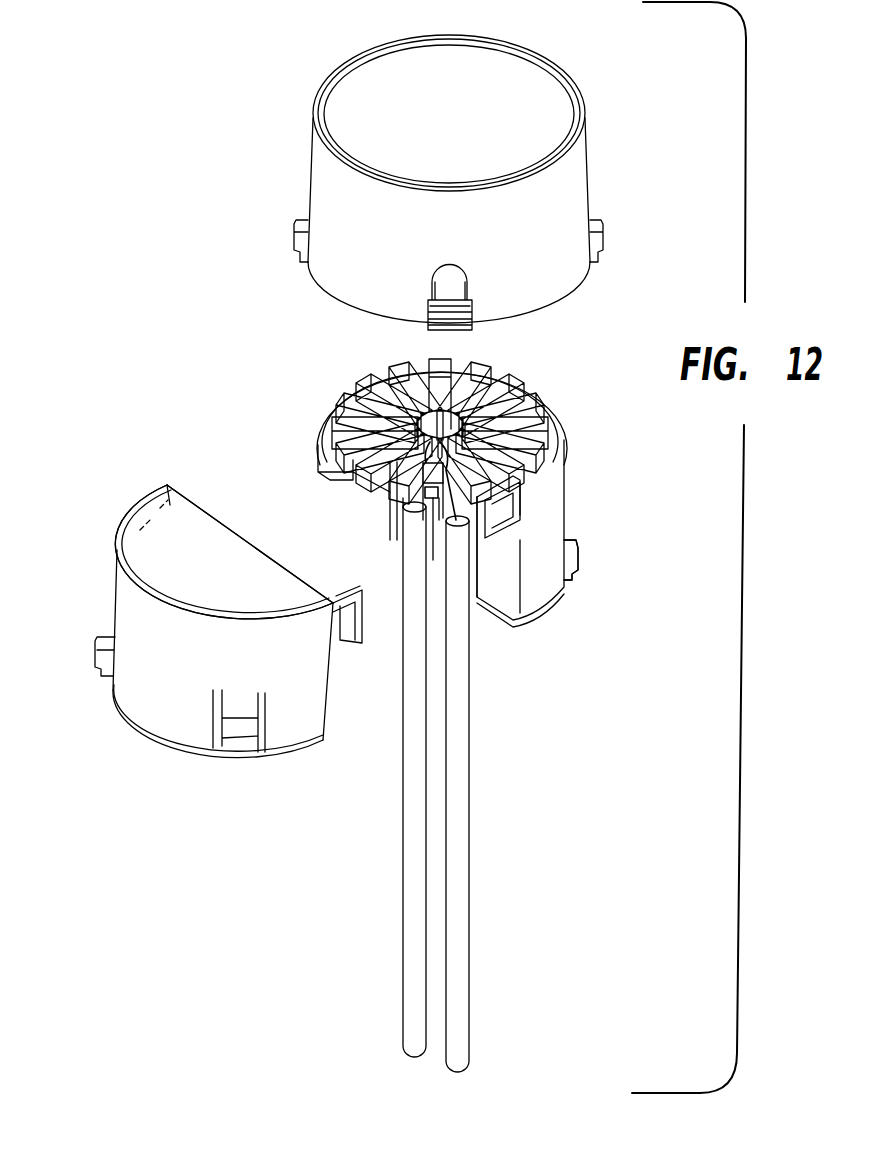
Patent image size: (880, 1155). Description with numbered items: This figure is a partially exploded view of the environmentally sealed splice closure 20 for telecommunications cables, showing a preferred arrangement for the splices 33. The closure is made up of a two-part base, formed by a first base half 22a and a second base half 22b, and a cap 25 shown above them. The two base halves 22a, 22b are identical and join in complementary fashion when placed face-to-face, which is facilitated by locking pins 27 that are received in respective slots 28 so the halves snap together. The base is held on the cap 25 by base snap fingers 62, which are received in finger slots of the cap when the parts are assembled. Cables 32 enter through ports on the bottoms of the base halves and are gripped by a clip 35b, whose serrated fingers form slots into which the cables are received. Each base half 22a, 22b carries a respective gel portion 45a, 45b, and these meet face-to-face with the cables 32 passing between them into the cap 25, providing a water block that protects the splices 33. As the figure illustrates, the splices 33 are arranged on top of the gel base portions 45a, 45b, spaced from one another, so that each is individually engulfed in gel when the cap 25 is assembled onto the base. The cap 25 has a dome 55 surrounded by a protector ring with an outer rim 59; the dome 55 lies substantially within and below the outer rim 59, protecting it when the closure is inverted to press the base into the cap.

The splice closure 20 is at (100, 208).
The cap 25 is at (312, 157).
The dome 55 is at (407, 83).
The locking pins 27 is at (317, 445).
The splices 33 is at (340, 388).
The gel portion 45a is at (193, 533).
The gel portion 45b is at (513, 493).
The slots 28 is at (513, 527).
The clip 35b is at (412, 541).
The outer rim 59 is at (158, 510).
The base snap fingers 62 is at (568, 577).
The base half 22a is at (113, 580).
The base half 22b is at (540, 615).
The cables 32 is at (455, 915).